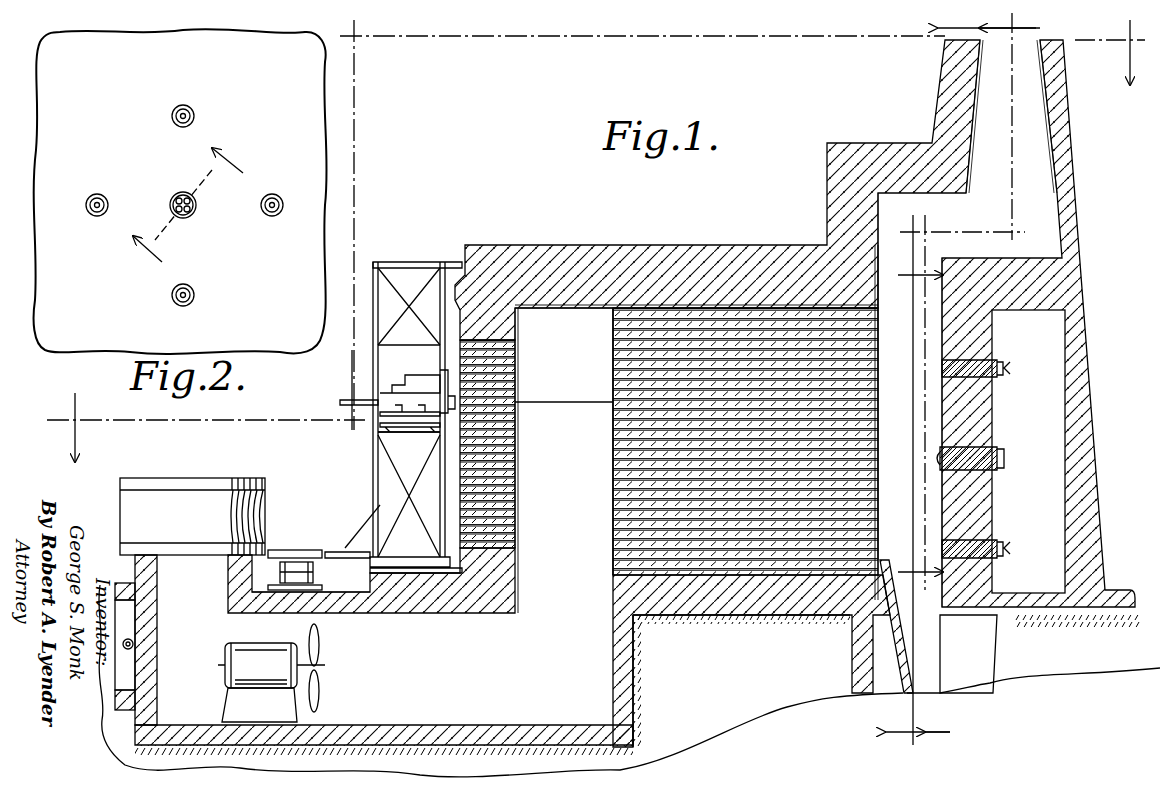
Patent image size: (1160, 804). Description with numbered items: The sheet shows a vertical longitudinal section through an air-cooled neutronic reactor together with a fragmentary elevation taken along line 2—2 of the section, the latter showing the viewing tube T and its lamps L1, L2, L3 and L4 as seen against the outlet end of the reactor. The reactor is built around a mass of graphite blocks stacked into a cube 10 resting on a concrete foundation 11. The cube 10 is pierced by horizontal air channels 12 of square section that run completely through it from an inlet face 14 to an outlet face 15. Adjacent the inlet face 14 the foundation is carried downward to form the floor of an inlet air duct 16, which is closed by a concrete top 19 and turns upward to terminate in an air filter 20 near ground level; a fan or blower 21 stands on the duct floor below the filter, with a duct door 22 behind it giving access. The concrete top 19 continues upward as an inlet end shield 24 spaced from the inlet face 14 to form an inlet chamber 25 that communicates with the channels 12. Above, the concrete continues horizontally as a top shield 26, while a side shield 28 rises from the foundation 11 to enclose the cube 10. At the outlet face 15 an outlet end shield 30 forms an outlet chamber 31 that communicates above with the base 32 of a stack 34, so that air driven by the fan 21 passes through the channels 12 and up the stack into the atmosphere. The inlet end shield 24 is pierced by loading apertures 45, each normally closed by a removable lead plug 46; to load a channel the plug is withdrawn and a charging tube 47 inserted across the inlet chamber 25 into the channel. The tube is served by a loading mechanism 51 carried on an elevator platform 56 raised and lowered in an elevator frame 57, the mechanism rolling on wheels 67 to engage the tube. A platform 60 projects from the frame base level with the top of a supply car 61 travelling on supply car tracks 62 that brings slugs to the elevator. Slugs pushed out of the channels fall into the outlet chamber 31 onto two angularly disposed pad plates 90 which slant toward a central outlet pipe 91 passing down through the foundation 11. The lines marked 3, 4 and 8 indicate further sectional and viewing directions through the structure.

In FIG. 1, the graphite cube 10 is at (635, 320).
In FIG. 1, the concrete foundation 11 is at (718, 612).
In FIG. 1, the air channels 12 is at (616, 530).
In FIG. 1, the inlet face 14 is at (616, 505).
In FIG. 1, the outlet face 15 is at (880, 456).
In FIG. 1, the inlet air duct 16 is at (447, 725).
In FIG. 1, the concrete top 19 is at (455, 613).
In FIG. 1, the air filter 20 is at (268, 503).
In FIG. 1, the fan or blower 21 is at (320, 690).
In FIG. 1, the duct door 22 is at (190, 635).
In FIG. 1, the inlet end shield 24 is at (518, 588).
In FIG. 1, the inlet chamber 25 is at (572, 571).
In FIG. 1, the top shield 26 is at (744, 246).
In FIG. 1, the side shield 28 is at (520, 320).
In FIG. 1, the outlet end shield 30 is at (982, 500).
In FIG. 2, the outlet end shield 30 is at (104, 315).
In FIG. 1, the outlet chamber 31 is at (912, 493).
In FIG. 1, the base of stack 32 is at (1097, 214).
In FIG. 1, the stack 34 is at (1010, 124).
In FIG. 1, the loading apertures 45 is at (518, 398).
In FIG. 1, the removable lead plug 46 is at (518, 445).
In FIG. 1, the charging tube 47 is at (553, 404).
In FIG. 1, the loading mechanism 51 is at (390, 392).
In FIG. 1, the elevator platform 56 is at (393, 437).
In FIG. 1, the elevator frame 57 is at (375, 476).
In FIG. 1, the platform 60 is at (348, 547).
In FIG. 1, the supply car 61 is at (283, 550).
In FIG. 1, the supply car tracks 62 is at (300, 590).
In FIG. 1, the wheels 67 is at (382, 424).
In FIG. 1, the pad plates 90 is at (862, 620).
In FIG. 1, the outlet pipe 91 is at (950, 690).
In FIG. 1, the lamp L1 is at (942, 368).
In FIG. 2, the lamp L1 is at (191, 108).
In FIG. 2, the lamp L2 is at (278, 195).
In FIG. 1, the lamp L3 is at (944, 546).
In FIG. 2, the lamp L3 is at (195, 295).
In FIG. 2, the lamp L4 is at (100, 187).
In FIG. 1, the viewing tube T is at (997, 458).
In FIG. 2, the viewing tube T is at (196, 213).
In FIG. 2, the section line 8 is at (187, 202).
In FIG. 1, the section line 2— 2 is at (915, 412).
In FIG. 1, the section line 3 is at (973, 387).
In FIG. 1, the section line 4 is at (589, 241).